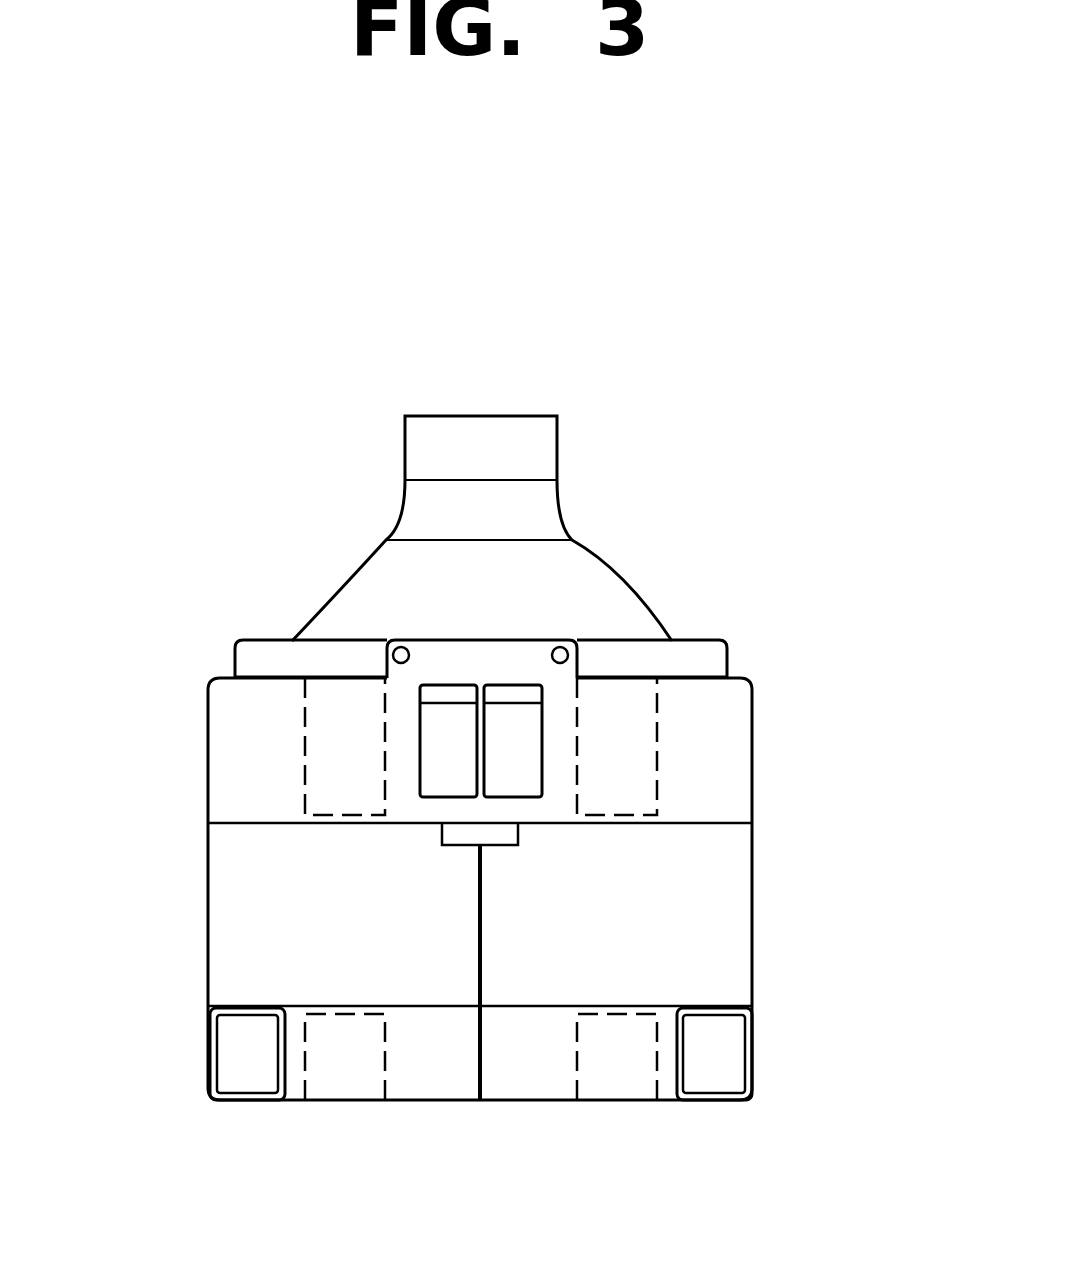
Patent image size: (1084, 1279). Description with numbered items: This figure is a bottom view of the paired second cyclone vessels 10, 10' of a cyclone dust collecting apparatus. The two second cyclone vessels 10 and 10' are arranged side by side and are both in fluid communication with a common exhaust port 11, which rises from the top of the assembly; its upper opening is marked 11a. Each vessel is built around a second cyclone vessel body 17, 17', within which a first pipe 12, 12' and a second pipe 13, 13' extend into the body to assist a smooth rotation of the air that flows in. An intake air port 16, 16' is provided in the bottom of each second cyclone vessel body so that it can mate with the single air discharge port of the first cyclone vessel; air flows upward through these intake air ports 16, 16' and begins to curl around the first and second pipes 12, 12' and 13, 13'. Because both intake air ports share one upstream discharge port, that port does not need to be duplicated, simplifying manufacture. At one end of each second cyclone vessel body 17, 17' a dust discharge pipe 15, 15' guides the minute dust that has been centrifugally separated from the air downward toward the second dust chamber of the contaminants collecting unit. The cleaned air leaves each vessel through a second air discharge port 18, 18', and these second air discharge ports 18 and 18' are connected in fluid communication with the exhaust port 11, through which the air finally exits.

The second cyclone vessel 10 is at (277, 1085).
The second cyclone vessel 10' is at (690, 1085).
The exhaust port 11 is at (562, 505).
The suction port 11a is at (503, 416).
The first pipe 12 is at (372, 1118).
The first pipe 12' is at (605, 1115).
The second pipe 13 is at (254, 746).
The second pipe 13' is at (714, 782).
The dust discharge pipe 15 is at (247, 1110).
The dust discharge pipe 15' is at (714, 1112).
The intake air port 16 is at (361, 660).
The intake air port 16' is at (659, 741).
The second cyclone vessel body 17 is at (149, 889).
The second cyclone vessel body 17' is at (824, 889).
The second air discharge port 18 is at (267, 626).
The second air discharge port 18' is at (676, 618).